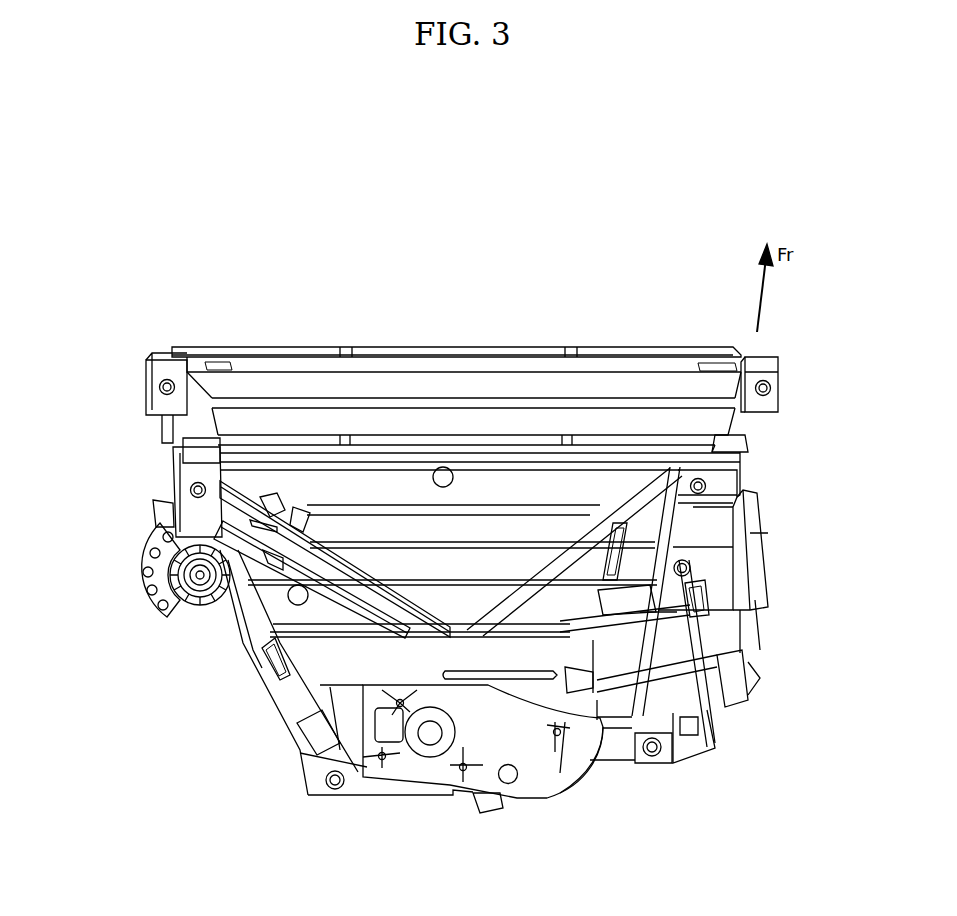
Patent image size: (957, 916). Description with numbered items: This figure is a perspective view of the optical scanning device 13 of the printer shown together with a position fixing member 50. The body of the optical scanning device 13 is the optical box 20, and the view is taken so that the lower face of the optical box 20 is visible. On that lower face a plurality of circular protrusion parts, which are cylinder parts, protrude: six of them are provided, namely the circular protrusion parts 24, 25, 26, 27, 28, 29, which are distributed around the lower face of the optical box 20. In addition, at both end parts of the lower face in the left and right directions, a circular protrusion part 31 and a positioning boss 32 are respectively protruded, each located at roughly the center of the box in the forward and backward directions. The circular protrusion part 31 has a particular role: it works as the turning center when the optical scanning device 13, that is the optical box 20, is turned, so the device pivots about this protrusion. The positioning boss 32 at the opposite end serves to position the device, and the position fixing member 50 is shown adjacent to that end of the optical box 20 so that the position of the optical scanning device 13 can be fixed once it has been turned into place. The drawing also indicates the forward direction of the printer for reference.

The optical scanning device 13 is at (469, 276).
The optical box 20 is at (403, 347).
The circular protrusion part 24 is at (150, 386).
The circular protrusion part 25 is at (186, 491).
The circular protrusion part 26 is at (772, 388).
The circular protrusion part 27 is at (707, 484).
The circular protrusion part 28 is at (326, 780).
The circular protrusion part 29 is at (663, 747).
The circular protrusion part 31 is at (692, 565).
The positioning boss 32 is at (207, 588).
The position fixing member 50 is at (146, 606).